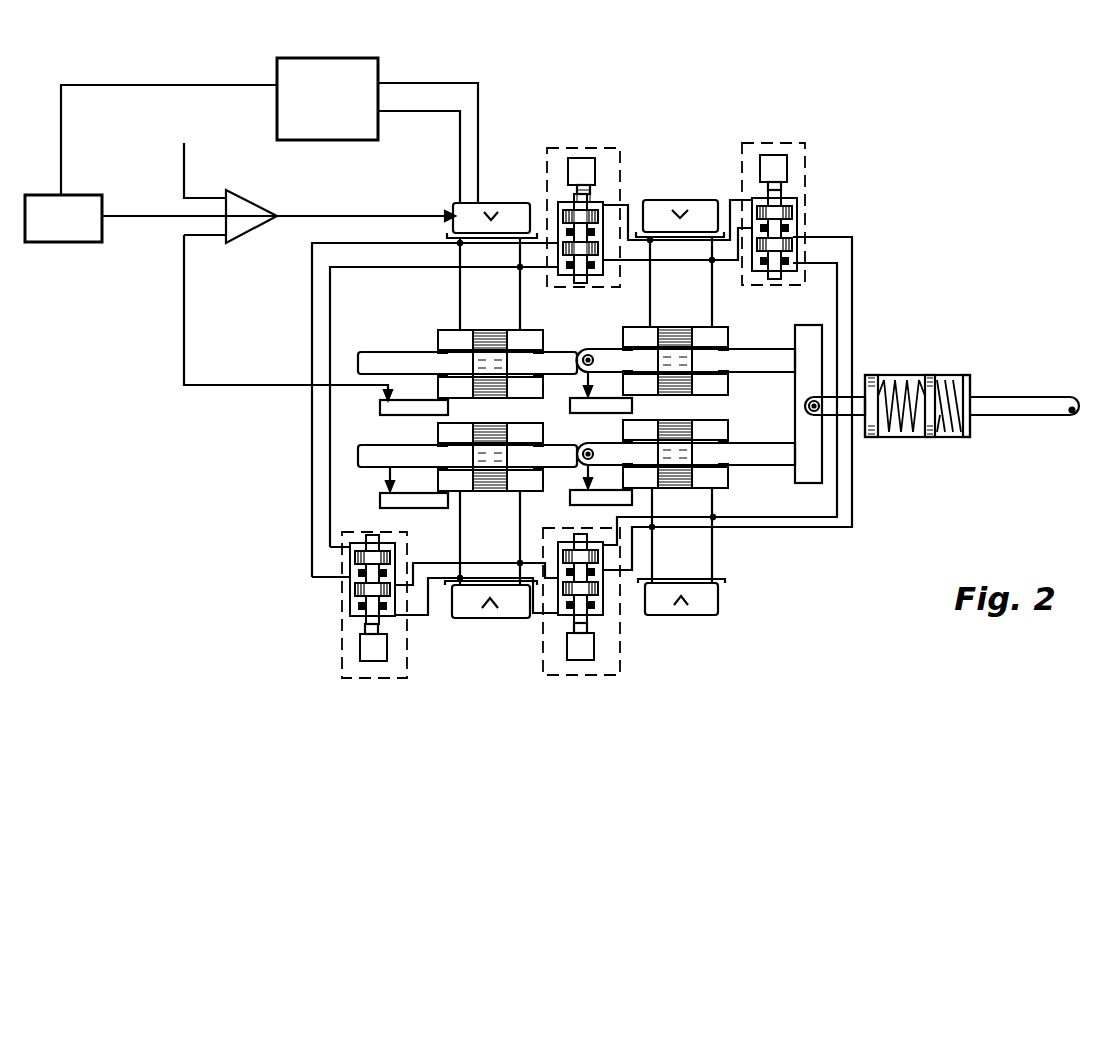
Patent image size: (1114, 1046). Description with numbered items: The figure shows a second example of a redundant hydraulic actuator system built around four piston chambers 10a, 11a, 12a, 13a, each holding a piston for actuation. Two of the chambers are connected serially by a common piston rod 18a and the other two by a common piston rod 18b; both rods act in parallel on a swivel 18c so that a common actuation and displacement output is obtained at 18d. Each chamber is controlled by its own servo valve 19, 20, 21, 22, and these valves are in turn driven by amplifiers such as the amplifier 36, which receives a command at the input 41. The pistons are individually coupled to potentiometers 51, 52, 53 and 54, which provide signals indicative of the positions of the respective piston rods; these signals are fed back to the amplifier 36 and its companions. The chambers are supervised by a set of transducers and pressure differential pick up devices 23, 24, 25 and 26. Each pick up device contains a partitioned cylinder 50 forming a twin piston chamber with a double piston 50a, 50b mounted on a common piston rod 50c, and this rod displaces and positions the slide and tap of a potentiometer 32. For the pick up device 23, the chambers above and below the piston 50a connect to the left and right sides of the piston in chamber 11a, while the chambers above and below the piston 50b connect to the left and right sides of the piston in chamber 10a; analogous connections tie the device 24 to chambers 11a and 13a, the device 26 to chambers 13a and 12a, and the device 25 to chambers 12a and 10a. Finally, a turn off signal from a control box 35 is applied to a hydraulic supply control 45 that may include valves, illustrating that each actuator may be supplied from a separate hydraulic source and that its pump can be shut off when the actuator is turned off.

The piston chamber 10a is at (530, 340).
The piston chamber 11a is at (722, 338).
The piston chamber 12a is at (728, 474).
The piston chamber 13a is at (522, 482).
The common piston rod 18a is at (757, 365).
The common piston rod 18b is at (757, 447).
The swivel 18c is at (810, 400).
The displacement output 18d is at (968, 362).
The servo valve 19 is at (458, 216).
The servo valve 20 is at (668, 215).
The servo valve 21 is at (715, 600).
The servo valve 22 is at (522, 603).
The pressure differential pick up device 23 is at (622, 180).
The pressure differential pick up device 24 is at (805, 180).
The pressure differential pick up device 25 is at (622, 650).
The pressure differential pick up device 26 is at (400, 655).
The potentiometer 32 is at (580, 655).
The control box 35 is at (63, 218).
The amplifier 36 is at (255, 218).
The input signal 41 is at (184, 158).
The hydraulic supply control 45 is at (380, 70).
The cylinder 50 is at (597, 590).
The piston 50a is at (568, 208).
The piston 50b is at (558, 250).
The common piston rod 50c is at (598, 197).
The potentiometer 51 is at (397, 410).
The potentiometer 52 is at (612, 407).
The potentiometer 53 is at (612, 500).
The potentiometer 54 is at (386, 500).